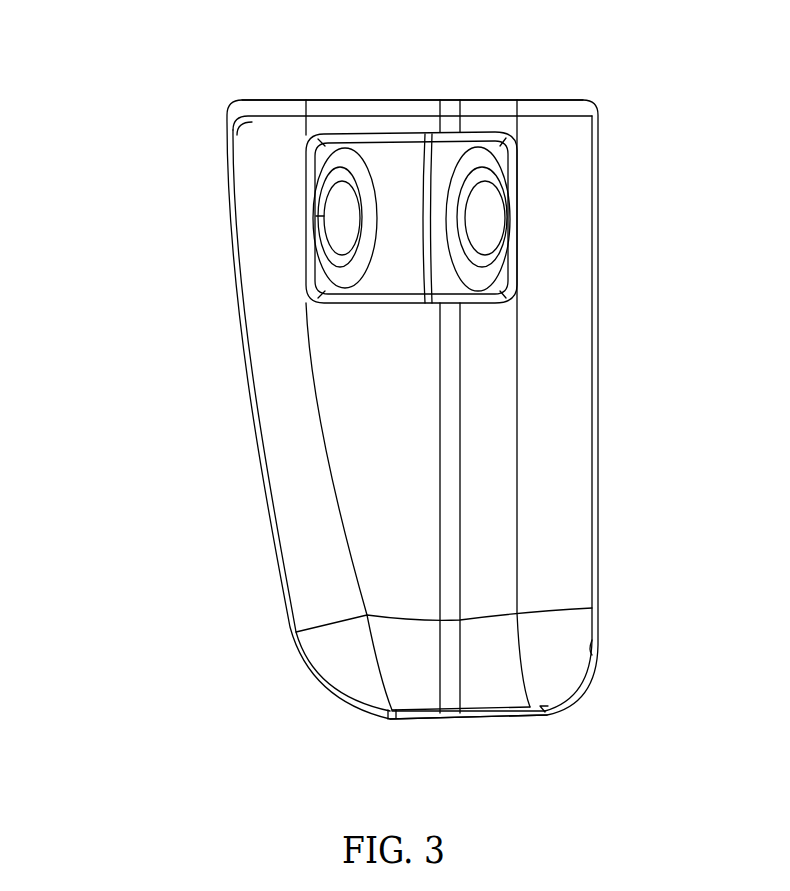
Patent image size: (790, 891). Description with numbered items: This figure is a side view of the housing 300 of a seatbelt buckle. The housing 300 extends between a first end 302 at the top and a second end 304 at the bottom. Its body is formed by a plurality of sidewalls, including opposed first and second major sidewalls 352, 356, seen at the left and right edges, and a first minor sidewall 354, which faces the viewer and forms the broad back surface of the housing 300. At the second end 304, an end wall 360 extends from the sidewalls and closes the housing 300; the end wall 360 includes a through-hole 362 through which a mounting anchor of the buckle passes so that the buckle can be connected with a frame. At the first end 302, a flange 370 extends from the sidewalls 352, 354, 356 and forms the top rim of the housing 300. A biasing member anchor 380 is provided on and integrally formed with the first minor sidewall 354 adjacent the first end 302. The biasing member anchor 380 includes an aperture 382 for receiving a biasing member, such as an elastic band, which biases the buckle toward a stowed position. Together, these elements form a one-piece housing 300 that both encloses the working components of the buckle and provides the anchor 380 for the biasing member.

The housing 300 is at (150, 44).
The first end 302 is at (525, 86).
The second end 304 is at (569, 733).
The first major sidewall 352 is at (232, 343).
The first minor sidewall 354 is at (412, 428).
The second major sidewall 356 is at (598, 432).
The end wall 360 is at (372, 712).
The through-hole 362 is at (448, 717).
The flange 370 is at (343, 110).
The biasing member anchor 380 is at (440, 272).
The aperture 382 is at (482, 208).